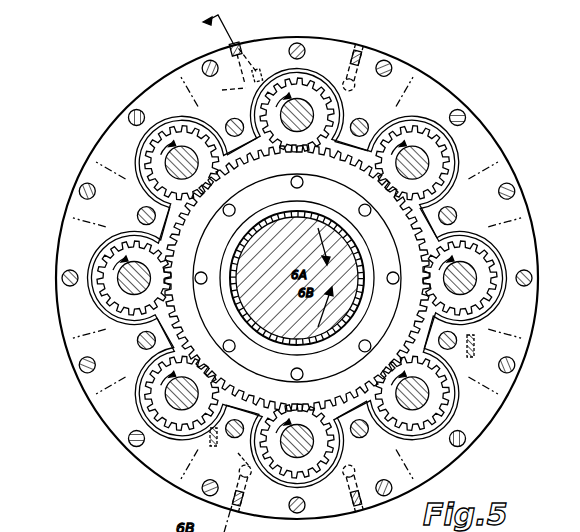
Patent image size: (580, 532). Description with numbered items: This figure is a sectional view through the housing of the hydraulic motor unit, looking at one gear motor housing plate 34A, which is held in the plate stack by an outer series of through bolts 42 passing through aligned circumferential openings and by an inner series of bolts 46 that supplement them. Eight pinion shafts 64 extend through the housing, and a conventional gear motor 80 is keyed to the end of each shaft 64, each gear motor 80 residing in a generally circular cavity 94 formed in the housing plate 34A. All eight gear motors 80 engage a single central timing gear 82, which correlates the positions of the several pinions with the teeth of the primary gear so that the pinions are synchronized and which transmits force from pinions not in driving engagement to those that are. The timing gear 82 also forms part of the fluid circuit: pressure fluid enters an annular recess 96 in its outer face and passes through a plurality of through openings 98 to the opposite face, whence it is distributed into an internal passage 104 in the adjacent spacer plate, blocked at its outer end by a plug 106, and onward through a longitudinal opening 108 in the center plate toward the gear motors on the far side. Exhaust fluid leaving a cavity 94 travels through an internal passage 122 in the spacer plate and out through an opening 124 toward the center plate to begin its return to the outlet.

The gear motor housing plate 34A is at (116, 140).
The through bolts 42 is at (456, 112).
The bolts 46 is at (358, 118).
The shaft portion 64 is at (110, 253).
The gear motor 80 is at (107, 290).
The timing gear 82 is at (172, 322).
The circular cavity 94 is at (134, 232).
The annular recess 96 is at (265, 380).
The through openings 98 is at (228, 340).
The internal passage 104 is at (252, 68).
The plug 106 is at (238, 42).
The longitudinal opening 108 is at (221, 91).
The internal passage 122 is at (345, 42).
The opening 124 is at (216, 440).